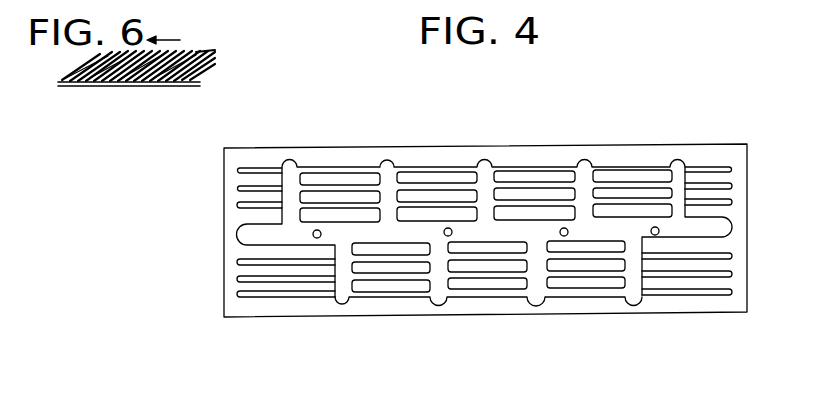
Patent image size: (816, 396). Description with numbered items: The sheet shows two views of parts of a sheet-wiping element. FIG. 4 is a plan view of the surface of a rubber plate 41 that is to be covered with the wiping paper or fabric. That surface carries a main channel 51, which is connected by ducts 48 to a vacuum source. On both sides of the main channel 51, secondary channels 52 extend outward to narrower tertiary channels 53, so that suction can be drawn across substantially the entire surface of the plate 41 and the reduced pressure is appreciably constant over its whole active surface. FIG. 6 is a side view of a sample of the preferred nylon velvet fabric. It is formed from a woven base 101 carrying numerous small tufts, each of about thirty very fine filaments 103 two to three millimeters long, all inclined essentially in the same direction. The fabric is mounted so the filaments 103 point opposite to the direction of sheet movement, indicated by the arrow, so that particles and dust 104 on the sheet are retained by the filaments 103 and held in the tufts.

In FIG. 4, the plate 41 is at (466, 157).
In FIG. 4, the ducts 48 is at (653, 238).
In FIG. 4, the main channel 51 is at (518, 235).
In FIG. 4, the secondary channels 52 is at (388, 166).
In FIG. 4, the tertiary channels 53 is at (256, 168).
In FIG. 6, the woven base 101 is at (148, 88).
In FIG. 6, the filaments 103 is at (194, 50).
In FIG. 6, the particles and dust 104 is at (82, 88).